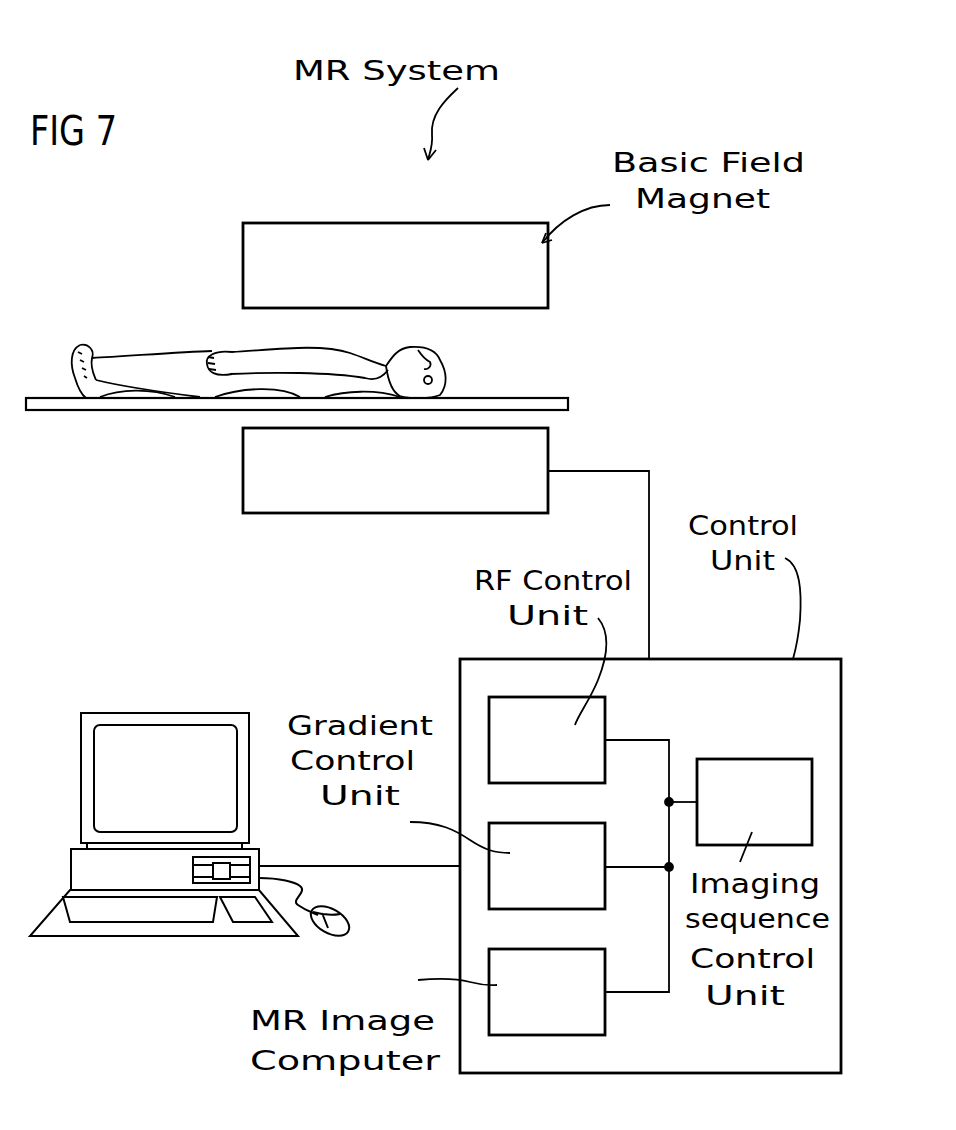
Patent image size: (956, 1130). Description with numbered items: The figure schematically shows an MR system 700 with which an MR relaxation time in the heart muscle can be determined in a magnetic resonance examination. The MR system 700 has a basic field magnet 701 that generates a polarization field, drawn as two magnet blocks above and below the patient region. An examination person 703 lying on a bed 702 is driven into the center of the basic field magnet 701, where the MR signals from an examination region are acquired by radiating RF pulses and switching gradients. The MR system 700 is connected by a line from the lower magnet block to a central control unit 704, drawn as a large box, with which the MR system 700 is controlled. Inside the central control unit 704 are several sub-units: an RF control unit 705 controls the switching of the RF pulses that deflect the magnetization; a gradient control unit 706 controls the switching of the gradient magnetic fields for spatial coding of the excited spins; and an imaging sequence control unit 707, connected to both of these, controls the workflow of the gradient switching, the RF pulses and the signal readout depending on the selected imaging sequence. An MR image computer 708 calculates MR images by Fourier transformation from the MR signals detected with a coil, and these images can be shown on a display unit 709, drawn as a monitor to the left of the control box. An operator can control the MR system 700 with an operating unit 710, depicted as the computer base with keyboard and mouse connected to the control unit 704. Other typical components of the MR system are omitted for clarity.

The MR system 700 is at (512, 178).
The basic field magnet 701 is at (548, 265).
The bed 702 is at (118, 415).
The examination person 703 is at (156, 359).
The central control unit 704 is at (742, 659).
The RF control unit 705 is at (605, 714).
The gradient control unit 706 is at (605, 823).
The imaging sequence control unit 707 is at (757, 759).
The MR image computer 708 is at (605, 1017).
The display unit 709 is at (165, 713).
The operating unit 710 is at (168, 940).